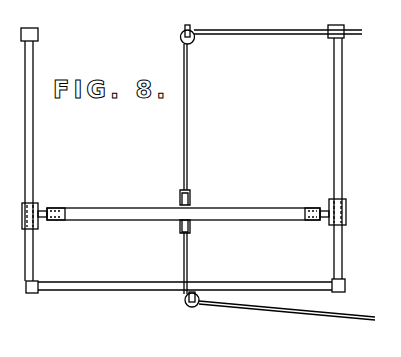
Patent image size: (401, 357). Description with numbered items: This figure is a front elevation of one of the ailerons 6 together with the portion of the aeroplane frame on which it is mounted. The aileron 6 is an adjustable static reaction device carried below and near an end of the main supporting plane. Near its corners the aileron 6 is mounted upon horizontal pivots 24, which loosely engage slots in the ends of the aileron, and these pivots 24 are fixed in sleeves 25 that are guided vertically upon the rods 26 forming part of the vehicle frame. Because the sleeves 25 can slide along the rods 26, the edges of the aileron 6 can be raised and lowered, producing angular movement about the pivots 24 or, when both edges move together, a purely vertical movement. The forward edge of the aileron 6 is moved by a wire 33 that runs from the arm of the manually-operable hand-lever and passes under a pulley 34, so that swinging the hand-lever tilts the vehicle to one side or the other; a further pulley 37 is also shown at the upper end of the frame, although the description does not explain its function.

The aileron 6 is at (232, 208).
The horizontal pivot 24 is at (44, 212).
The sleeve 25 is at (347, 216).
The rod 26 is at (34, 153).
The wire 33 is at (360, 315).
The pulley 34 is at (185, 303).
The upper pulley 37 is at (183, 34).